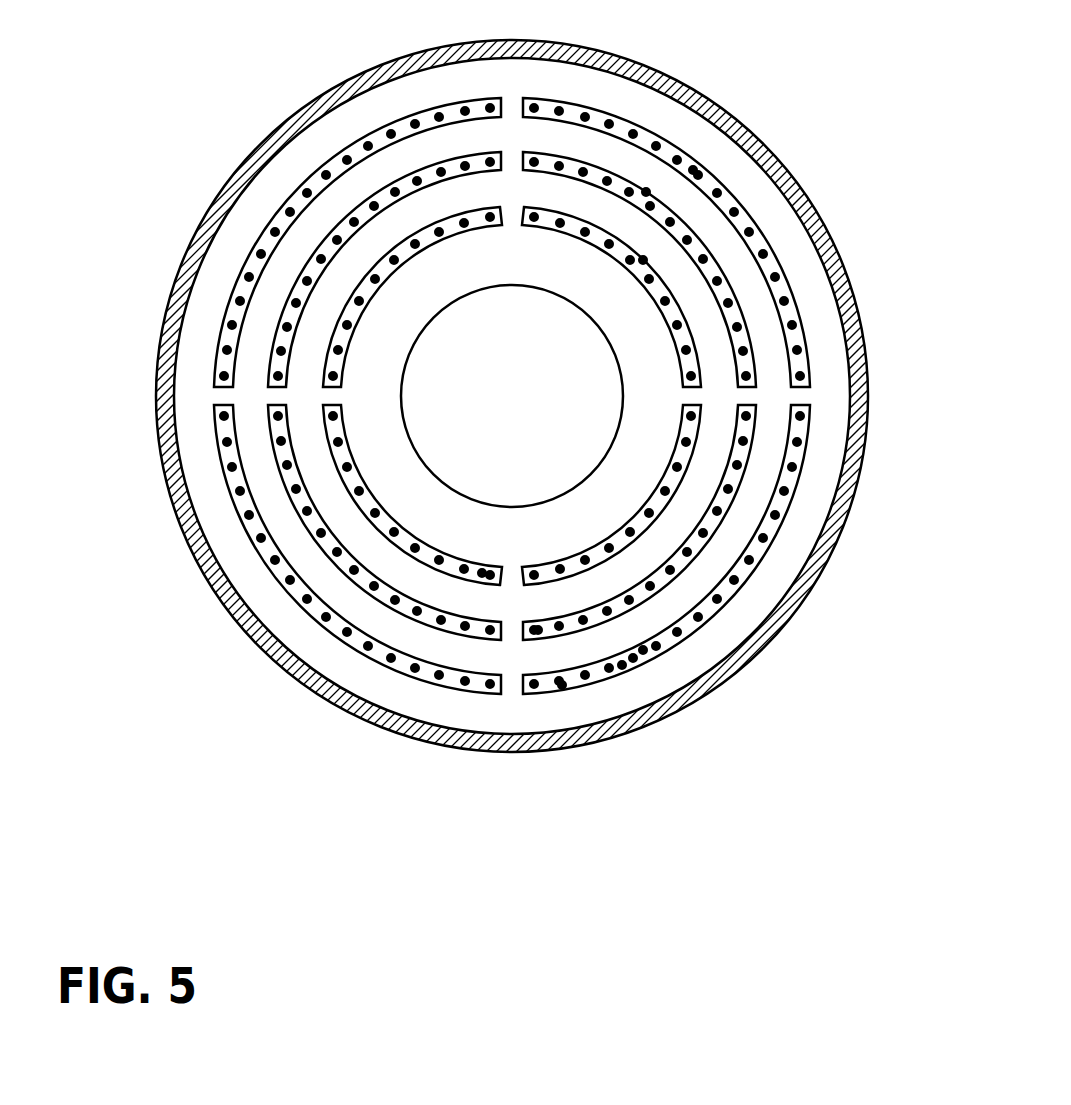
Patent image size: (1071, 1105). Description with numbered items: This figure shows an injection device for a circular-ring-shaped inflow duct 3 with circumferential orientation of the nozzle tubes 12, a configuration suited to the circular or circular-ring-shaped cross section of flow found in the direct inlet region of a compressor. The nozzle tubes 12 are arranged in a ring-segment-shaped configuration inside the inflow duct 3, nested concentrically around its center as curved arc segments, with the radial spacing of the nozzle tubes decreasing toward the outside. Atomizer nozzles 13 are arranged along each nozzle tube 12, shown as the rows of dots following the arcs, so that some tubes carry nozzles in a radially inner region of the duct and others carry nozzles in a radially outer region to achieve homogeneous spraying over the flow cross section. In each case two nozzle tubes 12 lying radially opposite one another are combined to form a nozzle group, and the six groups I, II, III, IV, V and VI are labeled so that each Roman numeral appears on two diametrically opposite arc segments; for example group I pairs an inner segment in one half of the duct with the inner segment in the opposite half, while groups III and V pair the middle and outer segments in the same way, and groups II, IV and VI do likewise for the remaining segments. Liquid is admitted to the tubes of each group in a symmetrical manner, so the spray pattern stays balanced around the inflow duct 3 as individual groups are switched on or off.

The inflow duct 3 is at (387, 398).
The nozzle group I is at (895, 680).
The nozzle group II is at (122, 636).
The nozzle group III is at (191, 55).
The nozzle group IV is at (895, 137).
The nozzle group V is at (136, 118).
The nozzle group VI is at (218, 752).
The nozzle tube 12 is at (562, 685).
The atomizer nozzle 13 is at (643, 260).